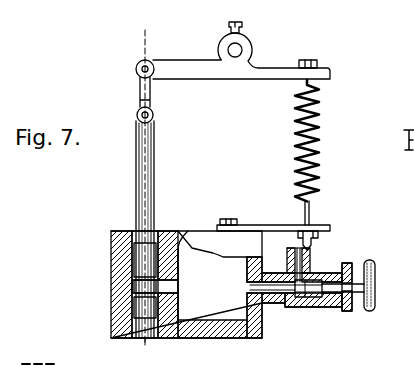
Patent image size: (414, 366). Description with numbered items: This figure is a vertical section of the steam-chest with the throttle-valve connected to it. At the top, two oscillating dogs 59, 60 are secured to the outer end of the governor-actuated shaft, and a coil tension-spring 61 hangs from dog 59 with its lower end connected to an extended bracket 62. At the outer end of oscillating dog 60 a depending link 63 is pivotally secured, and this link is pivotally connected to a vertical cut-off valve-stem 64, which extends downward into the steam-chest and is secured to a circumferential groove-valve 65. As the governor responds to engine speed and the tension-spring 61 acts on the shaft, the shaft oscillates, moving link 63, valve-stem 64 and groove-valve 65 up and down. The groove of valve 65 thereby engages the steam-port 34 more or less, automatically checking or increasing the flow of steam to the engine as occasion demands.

The steam-port 34 is at (165, 290).
The oscillating dog 59 is at (279, 77).
The oscillating dog 60 is at (175, 72).
The coil tension-spring 61 is at (318, 112).
The extended bracket 62 is at (263, 226).
The depending link 63 is at (138, 87).
The vertical cut-off valve-stem 64 is at (135, 189).
The circumferential groove-valve 65 is at (140, 258).